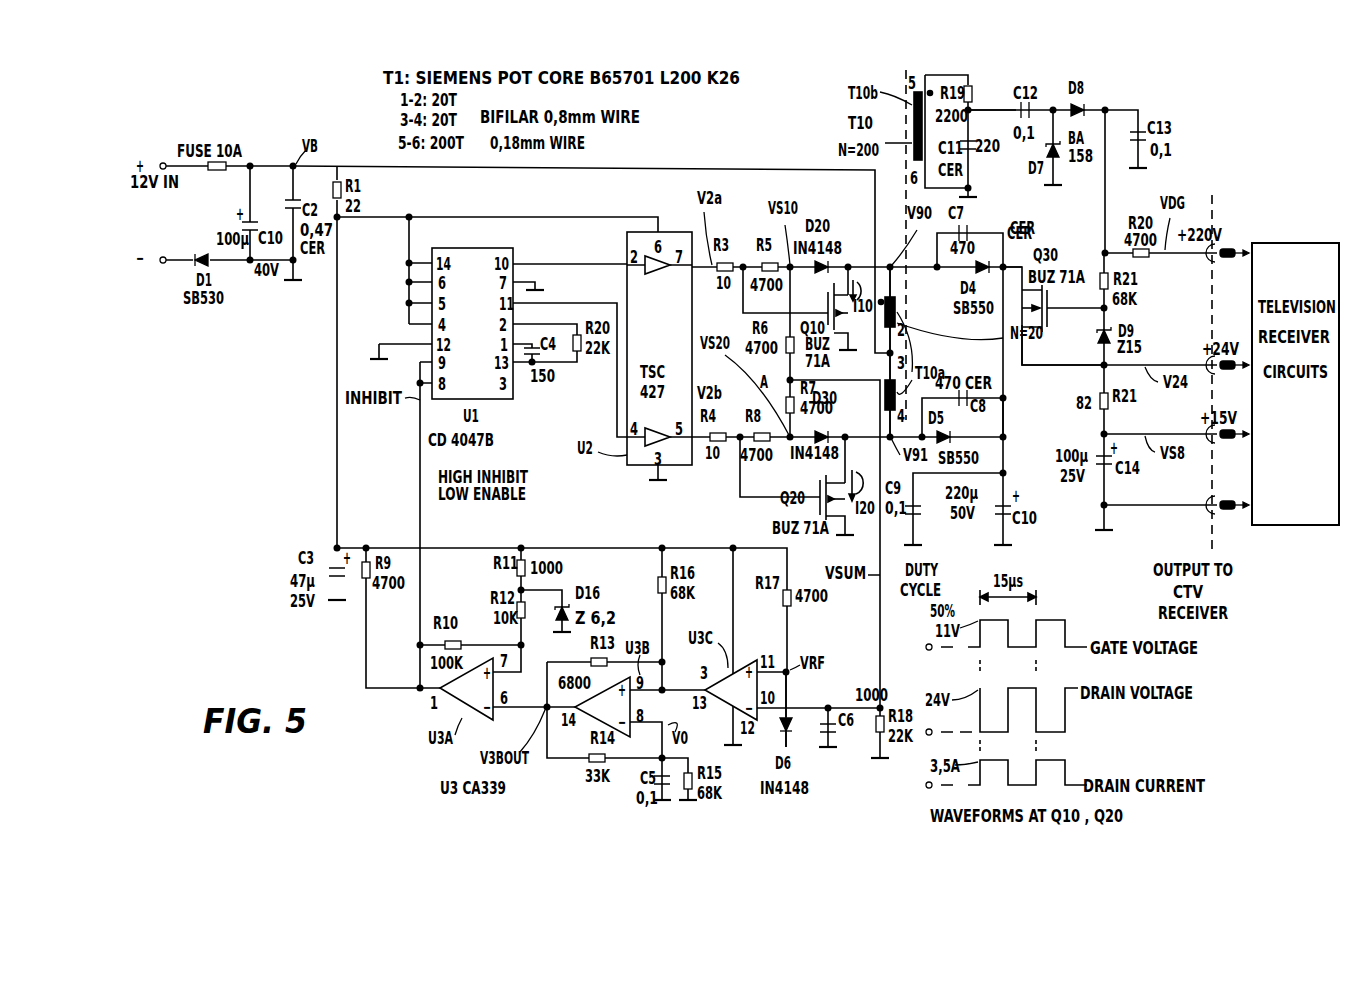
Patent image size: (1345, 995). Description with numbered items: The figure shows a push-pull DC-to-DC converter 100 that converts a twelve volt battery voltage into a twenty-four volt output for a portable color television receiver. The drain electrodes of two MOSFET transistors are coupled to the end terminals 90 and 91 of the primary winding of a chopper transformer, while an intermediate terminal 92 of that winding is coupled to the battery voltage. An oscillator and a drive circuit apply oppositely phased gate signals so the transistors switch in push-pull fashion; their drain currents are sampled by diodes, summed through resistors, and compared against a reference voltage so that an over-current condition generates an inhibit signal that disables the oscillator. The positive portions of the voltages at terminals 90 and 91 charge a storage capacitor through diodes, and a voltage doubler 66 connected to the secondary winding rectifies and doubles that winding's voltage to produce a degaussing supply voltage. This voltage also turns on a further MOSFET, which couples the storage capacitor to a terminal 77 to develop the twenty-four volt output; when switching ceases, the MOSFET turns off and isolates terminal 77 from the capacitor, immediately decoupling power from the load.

The voltage doubler 66 is at (992, 116).
The terminal 77 is at (1024, 368).
The end terminal of primary winding 90 is at (889, 265).
The end terminal of primary winding 91 is at (893, 445).
The intermediate terminal of primary winding 92 is at (888, 355).
The converter 100 is at (800, 820).